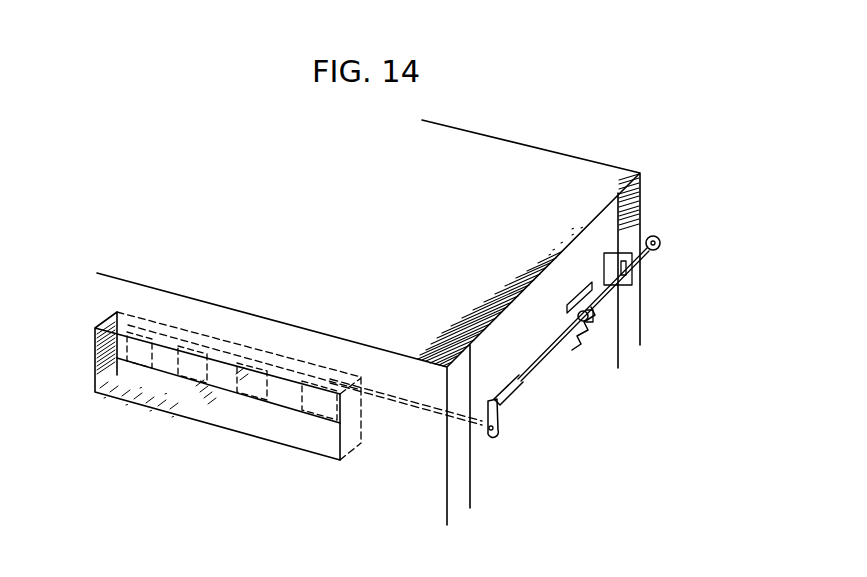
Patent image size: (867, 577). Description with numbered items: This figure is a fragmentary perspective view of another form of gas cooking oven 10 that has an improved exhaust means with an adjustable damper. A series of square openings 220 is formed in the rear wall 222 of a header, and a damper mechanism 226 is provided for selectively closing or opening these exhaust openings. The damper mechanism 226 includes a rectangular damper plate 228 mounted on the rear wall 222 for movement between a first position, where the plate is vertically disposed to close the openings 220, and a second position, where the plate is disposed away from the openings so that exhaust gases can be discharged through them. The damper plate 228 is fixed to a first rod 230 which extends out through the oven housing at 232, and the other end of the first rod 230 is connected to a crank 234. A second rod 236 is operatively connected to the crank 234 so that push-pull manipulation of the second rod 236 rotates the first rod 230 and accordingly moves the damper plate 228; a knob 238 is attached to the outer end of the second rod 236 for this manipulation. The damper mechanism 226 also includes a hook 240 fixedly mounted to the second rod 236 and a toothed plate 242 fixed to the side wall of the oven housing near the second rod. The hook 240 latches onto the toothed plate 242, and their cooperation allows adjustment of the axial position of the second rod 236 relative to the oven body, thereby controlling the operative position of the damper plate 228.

The gas cooking oven 10 is at (605, 159).
The square openings 220 is at (272, 382).
The rear wall 222 is at (175, 386).
The damper mechanism 226 is at (551, 395).
The damper plate 228 is at (140, 389).
The first rod 230 is at (412, 406).
The oven housing exit point 232 is at (480, 437).
The crank 234 is at (493, 426).
The second rod 236 is at (548, 341).
The knob 238 is at (657, 237).
The hook 240 is at (595, 318).
The toothed plate 242 is at (590, 340).